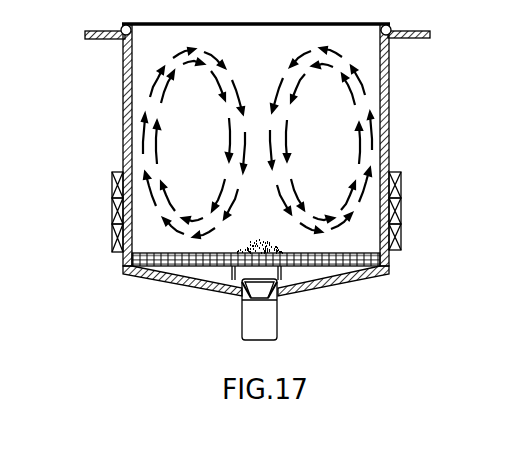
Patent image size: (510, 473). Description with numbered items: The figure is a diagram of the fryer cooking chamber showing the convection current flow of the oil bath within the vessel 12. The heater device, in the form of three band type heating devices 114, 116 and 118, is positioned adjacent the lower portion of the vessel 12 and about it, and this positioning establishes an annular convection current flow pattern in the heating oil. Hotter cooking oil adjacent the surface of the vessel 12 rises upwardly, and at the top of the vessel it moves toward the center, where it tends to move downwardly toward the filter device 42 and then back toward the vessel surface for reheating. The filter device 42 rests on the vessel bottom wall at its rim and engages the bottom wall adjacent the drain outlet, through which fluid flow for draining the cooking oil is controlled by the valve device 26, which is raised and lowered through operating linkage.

The vessel 12 is at (116, 105).
The filter device 42 is at (213, 271).
The valve device 26 is at (280, 287).
The band type heating device 114 is at (401, 183).
The band type heating device 116 is at (401, 213).
The band type heating device 118 is at (401, 246).